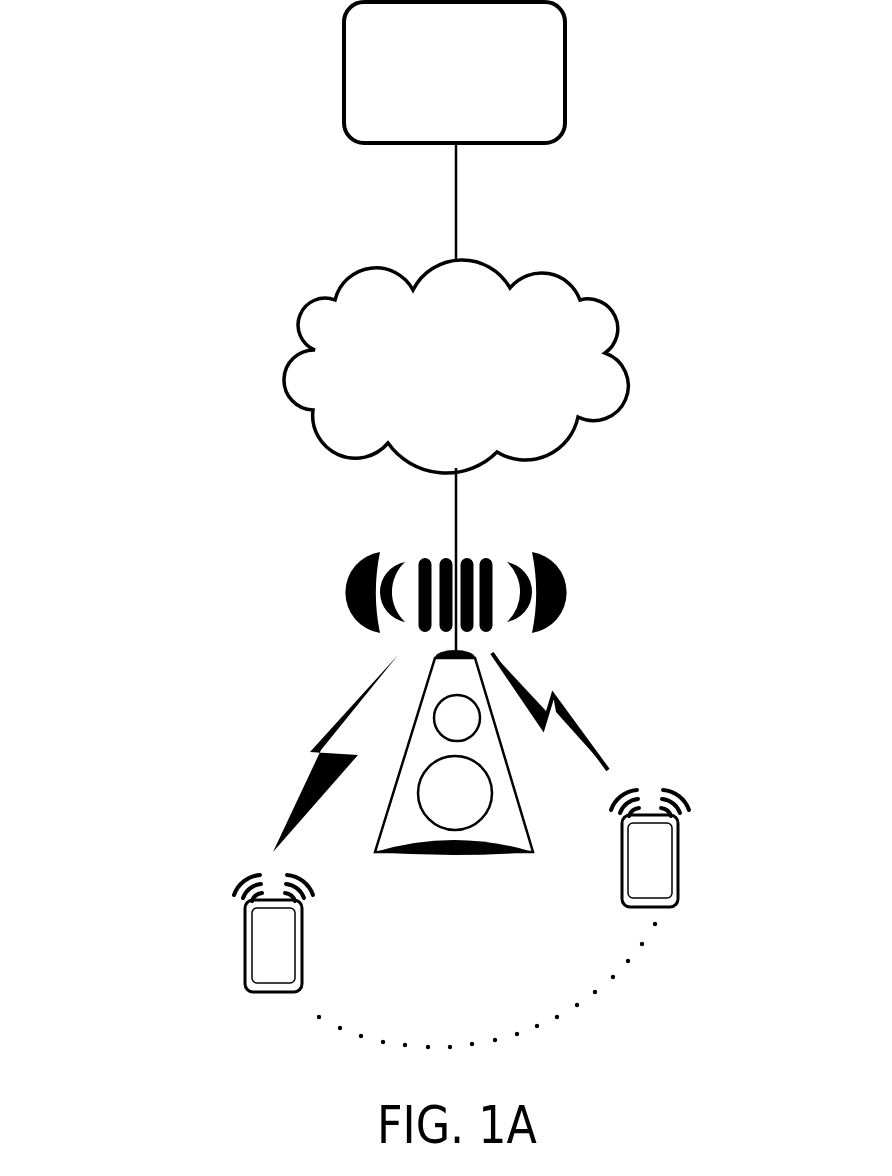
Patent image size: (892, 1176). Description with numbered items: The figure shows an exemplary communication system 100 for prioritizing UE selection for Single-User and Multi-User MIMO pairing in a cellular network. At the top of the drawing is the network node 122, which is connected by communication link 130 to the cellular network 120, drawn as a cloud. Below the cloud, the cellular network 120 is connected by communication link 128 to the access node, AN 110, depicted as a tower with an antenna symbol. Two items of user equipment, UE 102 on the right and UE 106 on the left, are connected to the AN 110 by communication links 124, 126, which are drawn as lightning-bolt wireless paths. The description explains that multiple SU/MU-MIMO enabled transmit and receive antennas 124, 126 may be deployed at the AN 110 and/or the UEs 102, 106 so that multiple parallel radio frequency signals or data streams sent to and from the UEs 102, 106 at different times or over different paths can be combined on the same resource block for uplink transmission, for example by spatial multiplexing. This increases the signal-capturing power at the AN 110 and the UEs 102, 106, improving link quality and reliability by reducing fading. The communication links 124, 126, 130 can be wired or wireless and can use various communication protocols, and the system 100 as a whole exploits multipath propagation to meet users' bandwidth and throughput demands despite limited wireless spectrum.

The communication system 100 is at (103, 1001).
The UE 102 is at (680, 877).
The UE 106 is at (242, 957).
The AN 110 is at (392, 855).
The cellular network 120 is at (456, 366).
The network node 122 is at (454, 72).
The communication link 124 is at (567, 715).
The communication link 126 is at (328, 730).
The communication link 128 is at (458, 527).
The communication link 130 is at (458, 228).